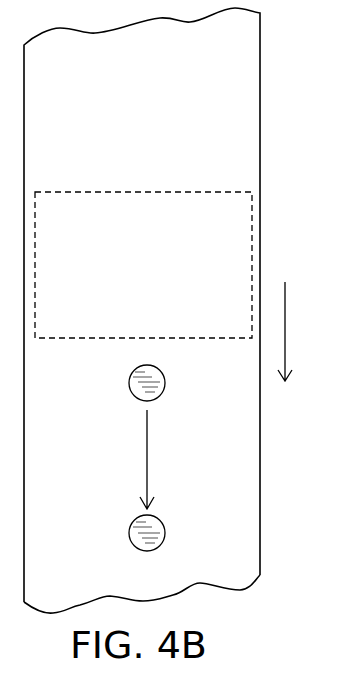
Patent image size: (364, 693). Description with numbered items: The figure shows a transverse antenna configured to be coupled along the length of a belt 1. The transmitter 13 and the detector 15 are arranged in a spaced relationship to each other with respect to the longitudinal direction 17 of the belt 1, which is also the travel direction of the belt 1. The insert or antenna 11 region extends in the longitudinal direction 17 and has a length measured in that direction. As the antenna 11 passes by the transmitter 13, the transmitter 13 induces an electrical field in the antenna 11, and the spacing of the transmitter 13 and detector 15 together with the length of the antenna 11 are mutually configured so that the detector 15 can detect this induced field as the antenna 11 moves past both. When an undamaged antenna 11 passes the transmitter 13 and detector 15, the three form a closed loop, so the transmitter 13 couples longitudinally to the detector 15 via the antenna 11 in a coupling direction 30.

The belt 1 is at (260, 68).
The antenna 11 is at (218, 191).
The transmitter 13 is at (165, 383).
The detector 15 is at (165, 533).
The longitudinal direction 17 is at (285, 317).
The coupling direction 30 is at (147, 443).